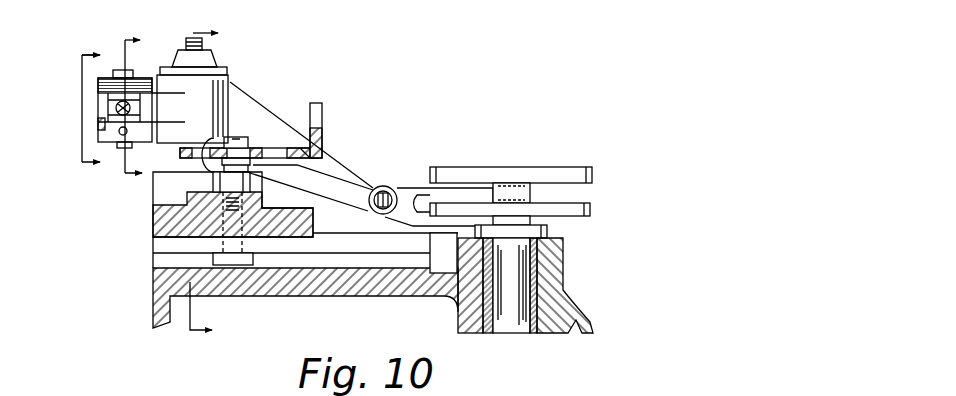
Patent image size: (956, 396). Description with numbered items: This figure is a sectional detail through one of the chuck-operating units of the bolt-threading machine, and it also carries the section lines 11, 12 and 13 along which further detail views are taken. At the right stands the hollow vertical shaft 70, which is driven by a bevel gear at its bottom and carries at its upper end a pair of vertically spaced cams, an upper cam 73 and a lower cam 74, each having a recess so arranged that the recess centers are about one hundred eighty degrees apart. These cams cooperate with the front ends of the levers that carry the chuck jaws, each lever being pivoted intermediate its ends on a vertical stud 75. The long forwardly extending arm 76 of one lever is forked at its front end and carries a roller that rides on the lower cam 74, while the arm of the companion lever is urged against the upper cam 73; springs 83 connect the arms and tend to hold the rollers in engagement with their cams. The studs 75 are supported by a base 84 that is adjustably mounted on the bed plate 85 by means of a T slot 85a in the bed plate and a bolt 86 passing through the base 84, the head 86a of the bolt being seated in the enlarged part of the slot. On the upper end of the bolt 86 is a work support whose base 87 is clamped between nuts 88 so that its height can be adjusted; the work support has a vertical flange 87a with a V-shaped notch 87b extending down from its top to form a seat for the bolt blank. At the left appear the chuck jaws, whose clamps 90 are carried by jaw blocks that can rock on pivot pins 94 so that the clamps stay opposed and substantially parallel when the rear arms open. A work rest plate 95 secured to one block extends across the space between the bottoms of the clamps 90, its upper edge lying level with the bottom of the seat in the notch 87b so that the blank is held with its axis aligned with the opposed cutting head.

The section line 11- 11 is at (103, 108).
The section line 12- 12 is at (145, 107).
The section line 13- 13 is at (218, 182).
The hollow vertical shaft 70 is at (513, 268).
The upper cam 73 is at (545, 172).
The lower cam 74 is at (590, 206).
The vertical stud 75 is at (193, 83).
The forwardly extending arm 76 is at (362, 180).
The spring 83 is at (397, 184).
The base 84 is at (153, 213).
The bed plate 85 is at (317, 285).
The T slot 85a is at (378, 270).
The bolt 86 is at (228, 218).
The bolt head 86a is at (247, 266).
The work support base 87 is at (266, 146).
The vertical flange 87a is at (323, 136).
The V-shaped notch 87b is at (321, 118).
The nuts 88 is at (222, 142).
The clamp 90 is at (100, 110).
The pivot pin 94 is at (143, 66).
The work rest plate 95 is at (104, 120).